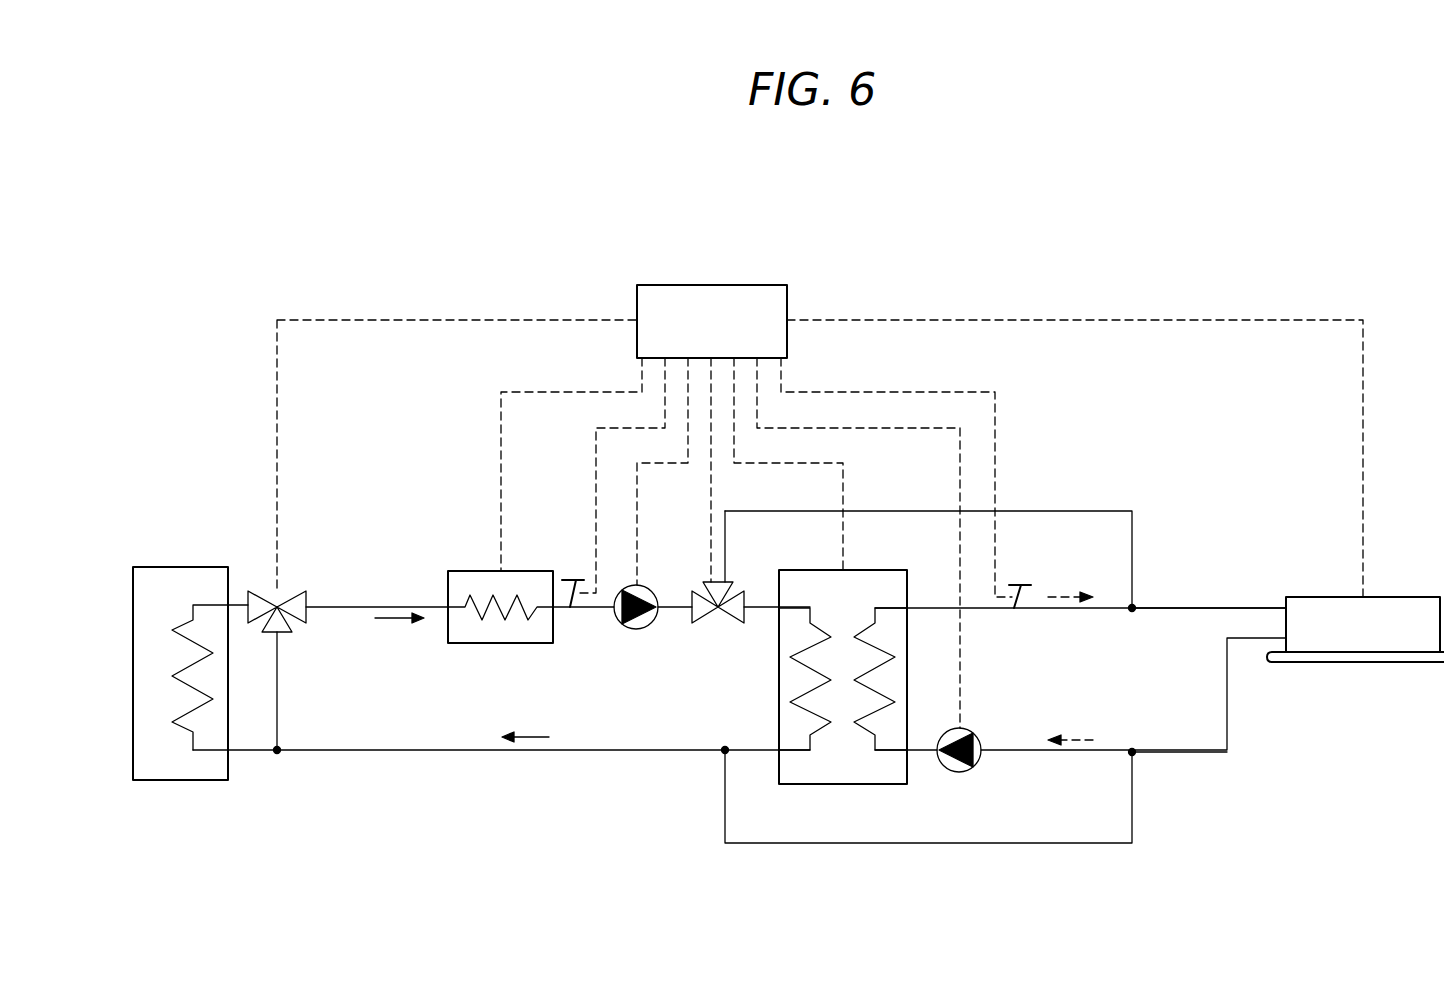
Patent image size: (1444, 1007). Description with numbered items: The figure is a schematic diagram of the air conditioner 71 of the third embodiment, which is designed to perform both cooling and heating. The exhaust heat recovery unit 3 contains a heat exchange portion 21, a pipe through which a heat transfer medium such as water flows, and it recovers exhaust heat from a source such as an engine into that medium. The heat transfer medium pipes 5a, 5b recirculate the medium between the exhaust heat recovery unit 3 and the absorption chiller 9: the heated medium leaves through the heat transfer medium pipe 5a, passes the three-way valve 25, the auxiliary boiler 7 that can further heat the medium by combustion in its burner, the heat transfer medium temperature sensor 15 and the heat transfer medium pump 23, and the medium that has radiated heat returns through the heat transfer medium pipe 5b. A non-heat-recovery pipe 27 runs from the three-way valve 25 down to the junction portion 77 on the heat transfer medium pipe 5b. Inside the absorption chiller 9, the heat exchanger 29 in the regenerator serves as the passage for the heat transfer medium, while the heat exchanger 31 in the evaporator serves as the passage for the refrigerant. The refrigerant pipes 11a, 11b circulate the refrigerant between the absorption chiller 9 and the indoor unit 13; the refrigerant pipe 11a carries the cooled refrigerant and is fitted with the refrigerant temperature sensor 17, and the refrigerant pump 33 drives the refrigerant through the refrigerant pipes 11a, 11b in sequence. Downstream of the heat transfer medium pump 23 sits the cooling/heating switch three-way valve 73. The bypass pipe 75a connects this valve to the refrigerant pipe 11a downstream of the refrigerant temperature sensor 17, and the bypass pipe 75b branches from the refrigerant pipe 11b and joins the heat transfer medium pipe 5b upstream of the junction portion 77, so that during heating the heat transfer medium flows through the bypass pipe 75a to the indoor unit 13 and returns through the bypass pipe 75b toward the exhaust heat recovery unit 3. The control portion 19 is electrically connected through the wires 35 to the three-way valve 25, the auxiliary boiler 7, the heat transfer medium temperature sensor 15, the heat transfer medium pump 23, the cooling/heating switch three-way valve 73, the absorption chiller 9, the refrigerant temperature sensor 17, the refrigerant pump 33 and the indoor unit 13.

The exhaust heat recovery unit 3 is at (185, 567).
The heat transfer medium pipe 5a is at (385, 604).
The heat transfer medium pipe 5b is at (385, 748).
The auxiliary boiler 7 is at (465, 571).
The absorption chiller 9 is at (843, 784).
The refrigerant pipe 11a is at (1160, 610).
The refrigerant pipe 11b is at (1165, 752).
The indoor unit 13 is at (1400, 597).
The heat transfer medium temperature sensor 15 is at (574, 580).
The refrigerant temperature sensor 17 is at (1022, 583).
The control portion 19 is at (711, 285).
The heat exchange portion 21 is at (183, 623).
The heat transfer medium pump 23 is at (633, 630).
The three-way valve 25 is at (308, 612).
The non-heat-recovery pipe 27 is at (278, 674).
The heat exchanger 29 is at (820, 731).
The heat exchanger 31 is at (868, 625).
The refrigerant pump 33 is at (975, 732).
The wires 35 is at (480, 320).
The air conditioner 71 is at (1170, 232).
The cooling/heating switch three-way valve 73 is at (722, 625).
The bypass pipe 75a is at (1048, 511).
The bypass pipe 75b is at (1048, 843).
The junction portion 77 is at (278, 753).